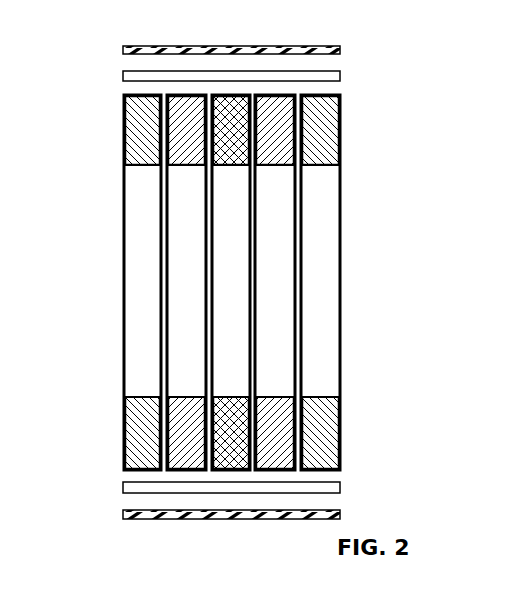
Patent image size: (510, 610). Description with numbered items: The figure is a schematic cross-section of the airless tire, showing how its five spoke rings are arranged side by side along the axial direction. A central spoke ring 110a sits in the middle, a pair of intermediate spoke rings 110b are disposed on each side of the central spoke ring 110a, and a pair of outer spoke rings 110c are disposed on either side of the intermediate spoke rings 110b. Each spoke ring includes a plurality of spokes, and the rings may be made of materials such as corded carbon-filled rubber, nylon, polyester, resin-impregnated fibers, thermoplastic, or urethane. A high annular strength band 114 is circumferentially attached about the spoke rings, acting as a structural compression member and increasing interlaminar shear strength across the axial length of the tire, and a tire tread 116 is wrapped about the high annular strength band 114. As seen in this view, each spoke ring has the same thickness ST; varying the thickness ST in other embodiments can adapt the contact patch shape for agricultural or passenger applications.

The tire tread 116 is at (287, 45).
The high annular strength band 114 is at (330, 71).
The central spoke ring 110a is at (218, 255).
The intermediate spoke rings 110b is at (175, 273).
The outer spoke rings 110c is at (130, 128).
The spoke ring thickness ST is at (143, 470).